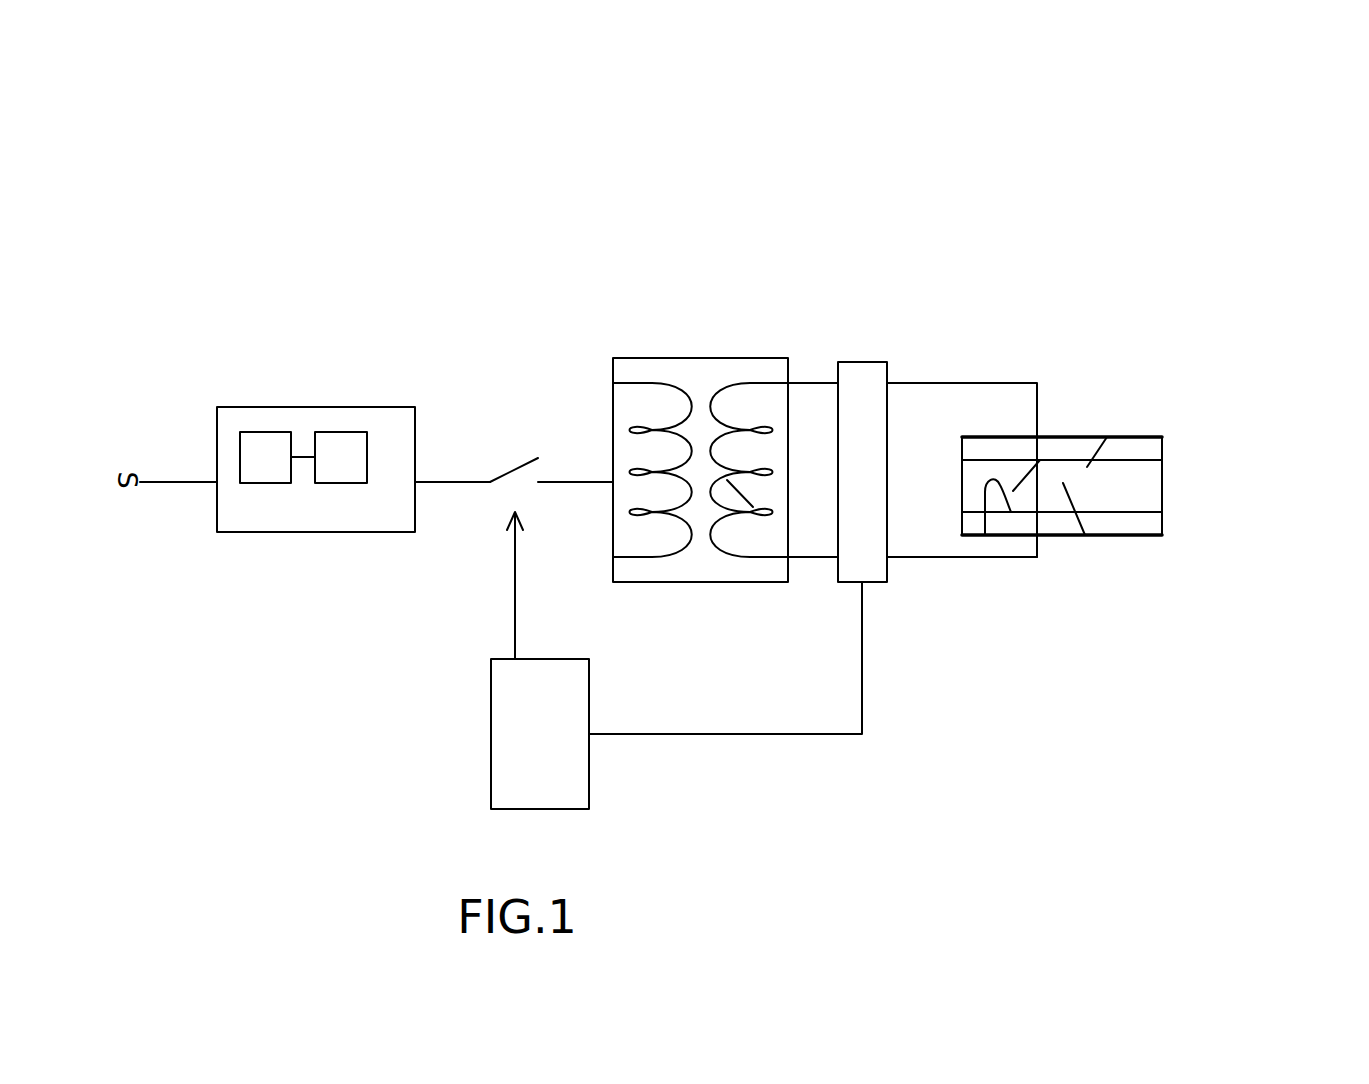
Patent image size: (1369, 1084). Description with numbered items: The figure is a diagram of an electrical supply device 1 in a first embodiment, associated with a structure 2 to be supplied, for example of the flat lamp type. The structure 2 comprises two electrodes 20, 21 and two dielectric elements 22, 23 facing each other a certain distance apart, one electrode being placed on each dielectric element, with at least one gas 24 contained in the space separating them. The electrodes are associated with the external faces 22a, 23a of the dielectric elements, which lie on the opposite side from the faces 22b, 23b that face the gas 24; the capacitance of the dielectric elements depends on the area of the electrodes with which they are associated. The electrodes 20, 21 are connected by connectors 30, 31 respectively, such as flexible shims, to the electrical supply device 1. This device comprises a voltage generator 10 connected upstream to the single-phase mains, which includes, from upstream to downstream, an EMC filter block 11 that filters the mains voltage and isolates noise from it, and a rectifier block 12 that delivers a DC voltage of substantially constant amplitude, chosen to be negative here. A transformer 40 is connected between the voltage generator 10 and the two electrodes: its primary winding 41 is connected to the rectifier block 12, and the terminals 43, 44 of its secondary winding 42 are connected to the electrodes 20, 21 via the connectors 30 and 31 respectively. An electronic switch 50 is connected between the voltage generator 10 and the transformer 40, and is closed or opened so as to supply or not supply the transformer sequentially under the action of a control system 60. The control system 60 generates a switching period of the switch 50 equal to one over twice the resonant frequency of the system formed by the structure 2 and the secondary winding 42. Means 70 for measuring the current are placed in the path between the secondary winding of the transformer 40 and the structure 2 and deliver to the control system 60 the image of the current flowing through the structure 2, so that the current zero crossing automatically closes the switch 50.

The electrical supply device 1 is at (218, 243).
The structure 2 is at (1194, 368).
The voltage generator 10 is at (338, 407).
The EMC filter block 11 is at (265, 430).
The rectifier block 12 is at (342, 483).
The electrode 20 is at (1140, 435).
The electrode 21 is at (1139, 537).
The dielectric element 22 is at (1163, 459).
The external face 22a is at (1087, 467).
The face facing the gas 22b is at (1013, 491).
The dielectric element 23 is at (1163, 514).
The external face 23a is at (1063, 483).
The face facing the gas 23b is at (985, 535).
The gas 24 is at (1163, 485).
The connector 30 is at (960, 383).
The connector 31 is at (915, 562).
The transformer 40 is at (737, 358).
The primary winding 41 is at (687, 412).
The secondary winding 42 is at (738, 535).
The terminal 43 is at (790, 383).
The terminal 44 is at (788, 560).
The switch 50 is at (492, 480).
The control system 60 is at (490, 732).
The means for measuring the current 70 is at (863, 362).